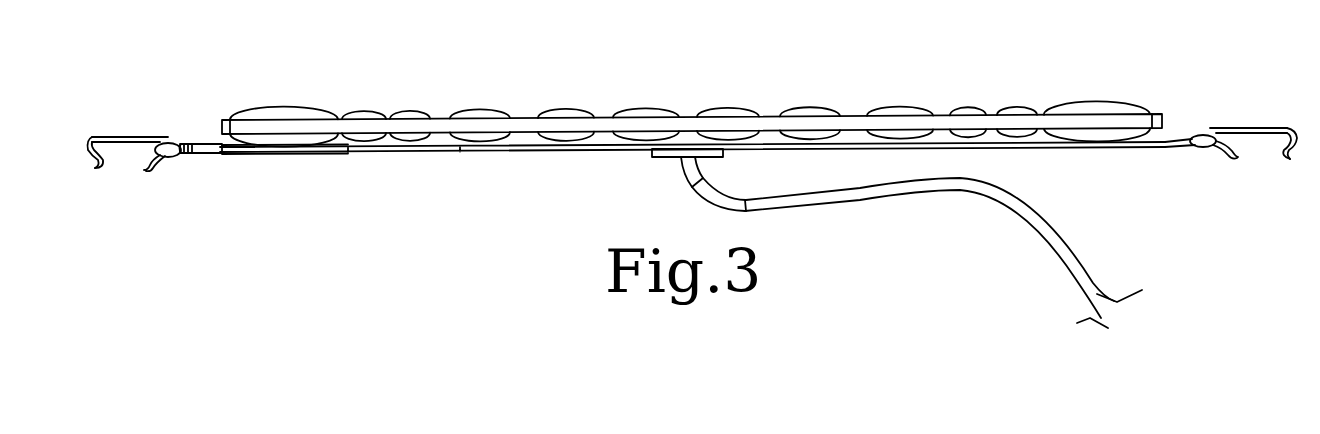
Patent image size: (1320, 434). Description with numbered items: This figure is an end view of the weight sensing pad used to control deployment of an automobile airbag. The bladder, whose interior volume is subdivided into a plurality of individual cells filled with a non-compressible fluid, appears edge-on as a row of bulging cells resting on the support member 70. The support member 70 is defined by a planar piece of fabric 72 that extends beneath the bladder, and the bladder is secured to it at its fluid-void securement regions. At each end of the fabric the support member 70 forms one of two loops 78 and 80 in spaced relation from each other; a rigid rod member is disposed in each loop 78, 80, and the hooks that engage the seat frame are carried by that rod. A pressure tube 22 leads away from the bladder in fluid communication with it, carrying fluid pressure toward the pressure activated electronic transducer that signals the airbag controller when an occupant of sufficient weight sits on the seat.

The pressure tube 22 is at (873, 191).
The support member 70 is at (497, 155).
The planar piece of fabric 72 is at (360, 153).
The loop 78 is at (1201, 135).
The loop 80 is at (192, 147).